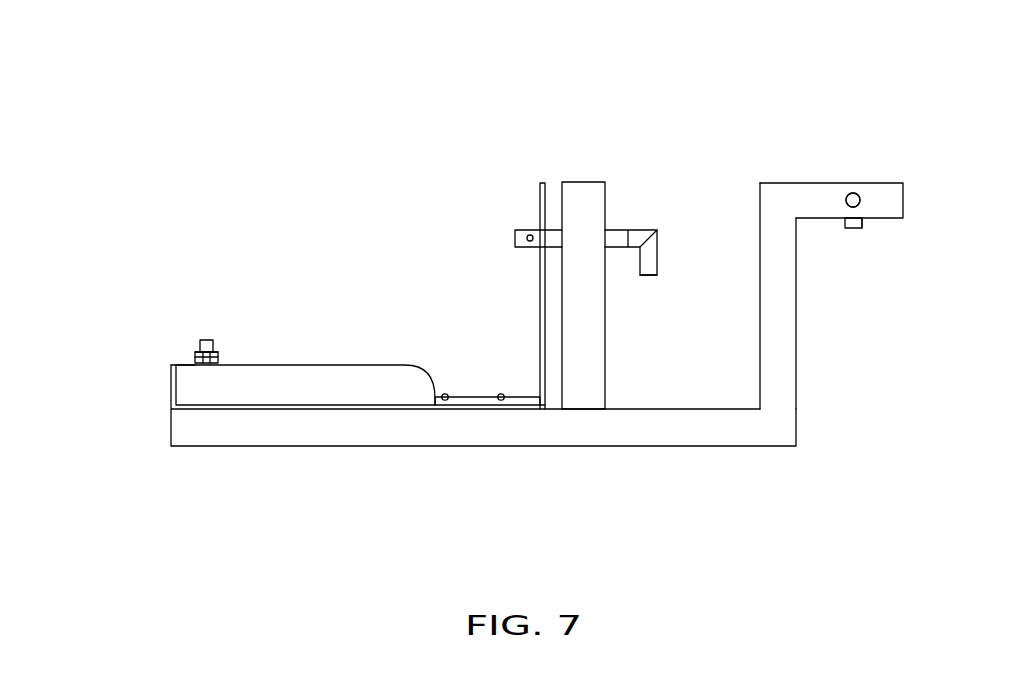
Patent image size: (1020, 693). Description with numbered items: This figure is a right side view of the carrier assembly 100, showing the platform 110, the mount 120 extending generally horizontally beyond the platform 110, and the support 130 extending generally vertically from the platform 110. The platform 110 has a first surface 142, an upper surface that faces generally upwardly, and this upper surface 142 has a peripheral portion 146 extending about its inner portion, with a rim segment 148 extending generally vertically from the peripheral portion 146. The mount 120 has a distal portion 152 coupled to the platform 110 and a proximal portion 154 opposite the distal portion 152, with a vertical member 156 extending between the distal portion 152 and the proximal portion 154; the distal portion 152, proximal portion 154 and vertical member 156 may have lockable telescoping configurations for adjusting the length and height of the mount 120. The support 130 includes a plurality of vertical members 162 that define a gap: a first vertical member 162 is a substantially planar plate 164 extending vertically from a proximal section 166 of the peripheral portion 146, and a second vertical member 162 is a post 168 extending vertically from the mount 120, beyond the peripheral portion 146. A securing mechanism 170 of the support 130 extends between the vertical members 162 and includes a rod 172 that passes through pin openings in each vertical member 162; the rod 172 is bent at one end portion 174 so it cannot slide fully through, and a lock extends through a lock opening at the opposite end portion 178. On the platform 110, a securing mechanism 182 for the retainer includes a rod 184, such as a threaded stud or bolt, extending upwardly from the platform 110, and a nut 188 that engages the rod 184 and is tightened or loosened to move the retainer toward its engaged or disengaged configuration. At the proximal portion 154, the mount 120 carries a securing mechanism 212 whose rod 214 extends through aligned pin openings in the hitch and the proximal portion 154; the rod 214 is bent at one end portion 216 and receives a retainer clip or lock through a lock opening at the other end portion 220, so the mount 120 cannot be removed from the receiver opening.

The carrier assembly 100 is at (130, 218).
The platform 110 is at (501, 394).
The mount 120 is at (794, 102).
The support 130 is at (538, 200).
The first surface 142 is at (443, 393).
The peripheral portion 146 is at (461, 405).
The rim segment 148 is at (172, 382).
The distal portion 152 is at (242, 446).
The proximal portion 154 is at (787, 172).
The vertical member 156 is at (797, 351).
The vertical member 162 is at (626, 193).
The substantially planar plate 164 is at (543, 183).
The proximal section 166 is at (551, 406).
The post 168 is at (597, 182).
The securing mechanism 170 is at (662, 247).
The rod 172 is at (647, 275).
The end portion 174 is at (657, 255).
The end portion 178 is at (515, 238).
The securing mechanism 182 is at (190, 360).
The rod 184 is at (207, 340).
The nut 188 is at (191, 356).
The securing mechanism 212 is at (862, 193).
The rod 214 is at (853, 229).
The end portion 216 is at (864, 230).
The end portion 220 is at (863, 204).